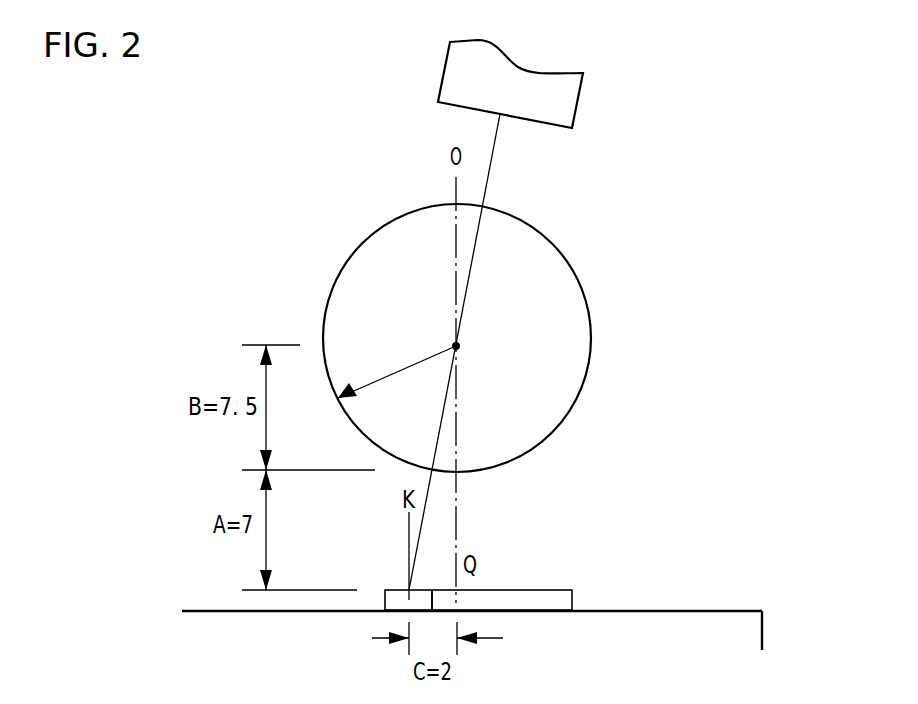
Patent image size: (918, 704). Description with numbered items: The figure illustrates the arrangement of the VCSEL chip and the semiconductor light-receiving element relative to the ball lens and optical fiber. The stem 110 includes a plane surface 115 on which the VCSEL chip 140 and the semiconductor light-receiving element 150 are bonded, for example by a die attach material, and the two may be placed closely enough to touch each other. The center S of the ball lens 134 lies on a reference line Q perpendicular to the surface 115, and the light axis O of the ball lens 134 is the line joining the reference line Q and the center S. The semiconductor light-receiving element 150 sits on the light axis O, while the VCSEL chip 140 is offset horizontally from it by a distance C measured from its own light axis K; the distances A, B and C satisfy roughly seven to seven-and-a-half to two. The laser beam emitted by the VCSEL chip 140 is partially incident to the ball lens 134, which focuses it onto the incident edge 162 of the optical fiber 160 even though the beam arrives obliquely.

The optical fiber 160 is at (562, 116).
The incident edge 162 is at (455, 104).
The ball lens 134 is at (553, 345).
The VCSEL chip 140 is at (387, 592).
The semiconductor light-receiving element 150 is at (572, 590).
The plane surface 115 is at (725, 610).
The stem 110 is at (763, 640).